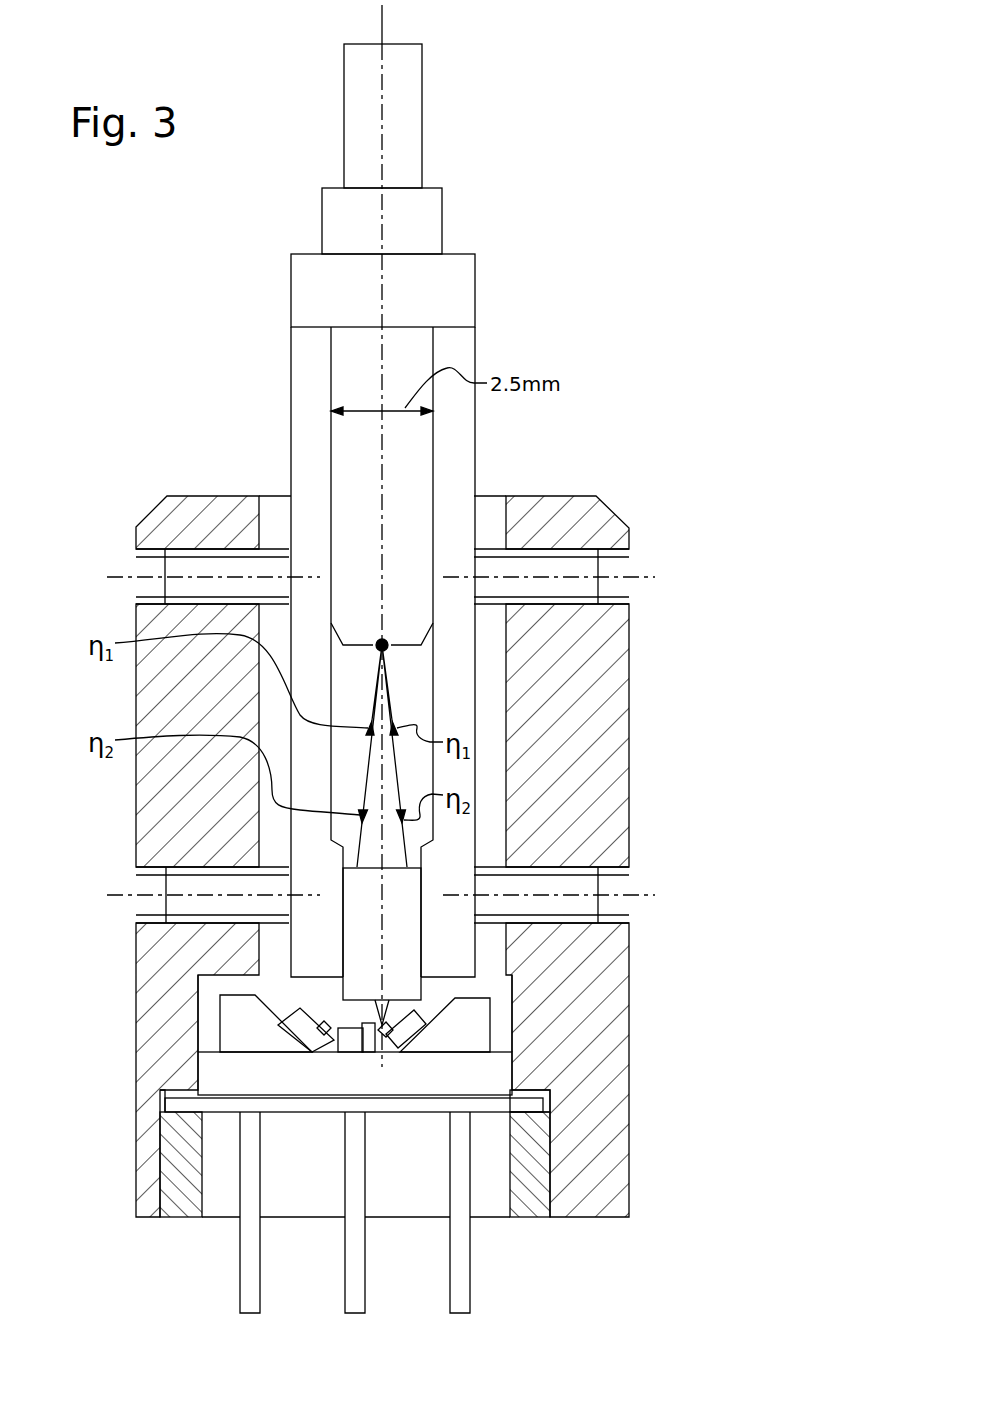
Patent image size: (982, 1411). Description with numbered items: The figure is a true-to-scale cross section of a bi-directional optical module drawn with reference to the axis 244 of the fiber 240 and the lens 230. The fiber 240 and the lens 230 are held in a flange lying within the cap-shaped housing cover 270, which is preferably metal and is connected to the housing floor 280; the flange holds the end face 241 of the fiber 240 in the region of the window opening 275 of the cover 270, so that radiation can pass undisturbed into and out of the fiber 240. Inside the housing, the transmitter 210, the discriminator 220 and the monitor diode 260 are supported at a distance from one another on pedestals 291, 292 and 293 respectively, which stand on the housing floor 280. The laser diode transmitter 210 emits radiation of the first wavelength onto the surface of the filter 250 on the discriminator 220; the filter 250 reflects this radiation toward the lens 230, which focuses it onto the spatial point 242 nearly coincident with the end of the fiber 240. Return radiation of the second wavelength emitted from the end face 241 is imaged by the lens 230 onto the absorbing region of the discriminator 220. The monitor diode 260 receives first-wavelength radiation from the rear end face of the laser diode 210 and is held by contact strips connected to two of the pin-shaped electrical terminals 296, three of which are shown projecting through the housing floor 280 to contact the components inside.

The axis 244 is at (383, 75).
The fiber 240 is at (403, 160).
The window opening 275 is at (474, 525).
The end face 241 is at (389, 648).
The spatial point 242 is at (386, 649).
The housing cover 270 is at (604, 750).
The lens 230 is at (400, 911).
The filter 250 is at (391, 1015).
The pedestal 291 is at (230, 1013).
The pedestal 293 is at (470, 1023).
The housing floor 280 is at (493, 1077).
The monitor diode 260 is at (290, 1027).
The discriminator 220 is at (400, 1048).
The transmitter 210 is at (362, 1028).
The pedestal 292 is at (365, 1047).
The electrical terminals 296 is at (252, 1245).